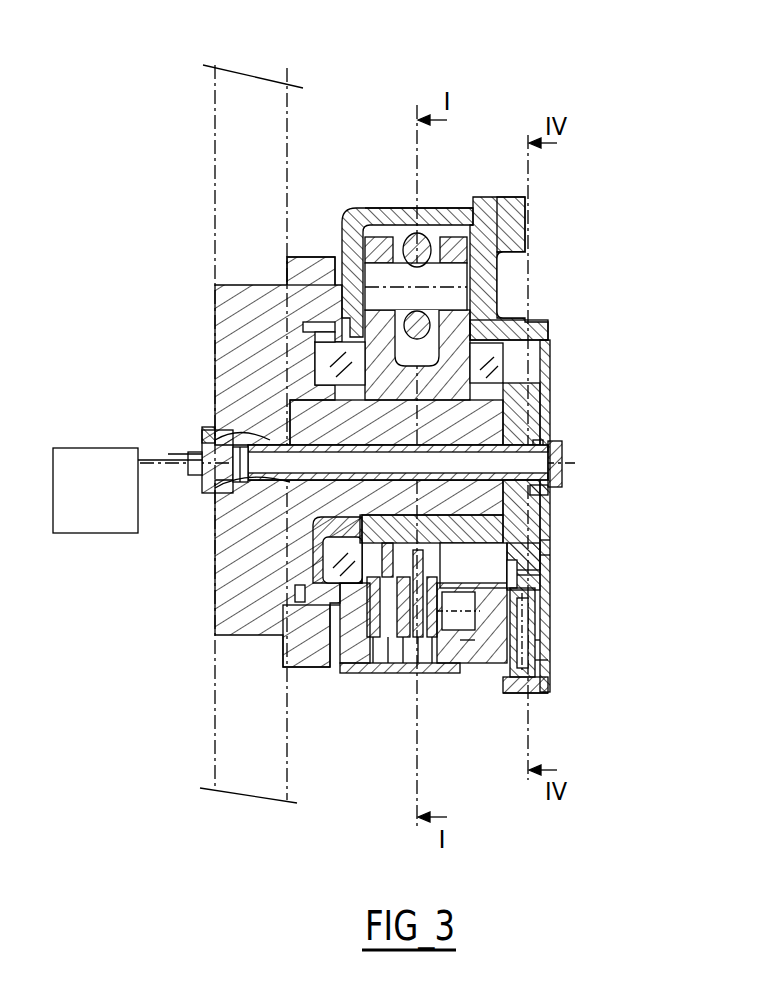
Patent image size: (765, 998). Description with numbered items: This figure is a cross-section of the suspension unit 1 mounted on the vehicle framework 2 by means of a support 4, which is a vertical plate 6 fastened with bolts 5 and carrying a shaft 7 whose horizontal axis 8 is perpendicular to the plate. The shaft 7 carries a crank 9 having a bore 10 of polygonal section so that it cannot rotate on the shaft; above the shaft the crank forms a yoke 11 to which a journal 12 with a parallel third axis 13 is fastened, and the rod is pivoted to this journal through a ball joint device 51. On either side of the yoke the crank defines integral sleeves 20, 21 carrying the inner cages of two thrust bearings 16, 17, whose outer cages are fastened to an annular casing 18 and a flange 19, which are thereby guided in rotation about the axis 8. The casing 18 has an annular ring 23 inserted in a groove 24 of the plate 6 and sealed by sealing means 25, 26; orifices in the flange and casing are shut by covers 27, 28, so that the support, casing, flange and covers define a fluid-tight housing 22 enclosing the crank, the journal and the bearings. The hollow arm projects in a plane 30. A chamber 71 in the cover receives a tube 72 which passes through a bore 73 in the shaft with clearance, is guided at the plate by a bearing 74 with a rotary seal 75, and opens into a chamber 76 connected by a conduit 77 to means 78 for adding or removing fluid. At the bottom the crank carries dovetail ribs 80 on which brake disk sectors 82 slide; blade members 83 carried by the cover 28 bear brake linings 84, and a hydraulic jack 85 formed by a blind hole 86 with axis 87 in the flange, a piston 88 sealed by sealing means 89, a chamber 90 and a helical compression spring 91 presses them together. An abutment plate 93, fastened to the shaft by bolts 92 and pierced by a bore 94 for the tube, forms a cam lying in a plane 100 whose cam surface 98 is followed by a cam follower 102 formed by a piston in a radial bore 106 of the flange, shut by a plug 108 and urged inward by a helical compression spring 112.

The suspension unit 1 is at (378, 88).
The framework 2 is at (253, 107).
The support 4 is at (240, 568).
The bolts 5 is at (300, 270).
The vertical plate 6 is at (243, 636).
The shaft 7 is at (548, 400).
The transverse second axis 8 is at (572, 459).
The crank 9 is at (542, 558).
The bore 10 is at (510, 390).
The yoke 11 is at (385, 235).
The journal 12 is at (505, 258).
The transverse third axis 13 is at (510, 297).
The thrust bearing 16 is at (337, 395).
The thrust bearing 17 is at (540, 330).
The casing 18 is at (365, 212).
The flange 19 is at (522, 214).
The sleeve 20 is at (337, 410).
The sleeve 21 is at (518, 355).
The fluid-tight housing 22 is at (542, 173).
The annular ring 23 is at (322, 640).
The groove 24 is at (296, 600).
The sealing means 25 is at (297, 323).
The sealing means 26 is at (310, 338).
The cover 27 is at (520, 524).
The cover 28 is at (380, 670).
The plane 30 is at (410, 764).
The ball joint device 51 is at (420, 240).
The chamber 71 is at (560, 449).
The tube 72 is at (552, 468).
The bore 73 is at (322, 520).
The bearing 74 is at (240, 420).
The rotary seal 75 is at (262, 495).
The fluid-tight chamber 76 is at (213, 443).
The conduit 77 is at (195, 466).
The means for adding or removing fluid 78 is at (85, 515).
The dovetail-shaped ribs 80 is at (505, 562).
The brake disk sectors 82 is at (386, 660).
The blade members 83 is at (426, 577).
The brake lining 84 is at (355, 640).
The hydraulic jack 85 is at (452, 632).
The blind hole 86 is at (478, 615).
The axis 87 is at (540, 642).
The piston 88 is at (440, 660).
The sealing means 89 is at (414, 660).
The fluid-tight chamber 90 is at (472, 642).
The helical compression spring 91 is at (473, 567).
The bolts 92 is at (555, 416).
The abutment plate 93 is at (545, 544).
The bore 94 is at (542, 494).
The cam surface 98 is at (517, 587).
The plane 100 is at (518, 722).
The cam follower 102 is at (520, 577).
The bore 106 is at (538, 677).
The plug 108 is at (540, 694).
The helical compression spring 112 is at (545, 662).